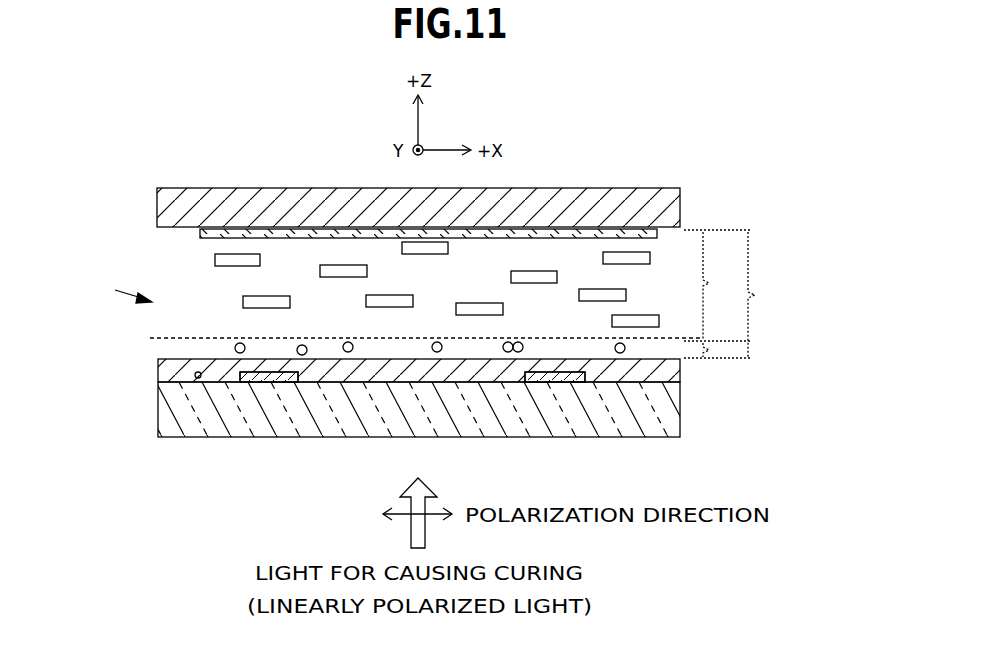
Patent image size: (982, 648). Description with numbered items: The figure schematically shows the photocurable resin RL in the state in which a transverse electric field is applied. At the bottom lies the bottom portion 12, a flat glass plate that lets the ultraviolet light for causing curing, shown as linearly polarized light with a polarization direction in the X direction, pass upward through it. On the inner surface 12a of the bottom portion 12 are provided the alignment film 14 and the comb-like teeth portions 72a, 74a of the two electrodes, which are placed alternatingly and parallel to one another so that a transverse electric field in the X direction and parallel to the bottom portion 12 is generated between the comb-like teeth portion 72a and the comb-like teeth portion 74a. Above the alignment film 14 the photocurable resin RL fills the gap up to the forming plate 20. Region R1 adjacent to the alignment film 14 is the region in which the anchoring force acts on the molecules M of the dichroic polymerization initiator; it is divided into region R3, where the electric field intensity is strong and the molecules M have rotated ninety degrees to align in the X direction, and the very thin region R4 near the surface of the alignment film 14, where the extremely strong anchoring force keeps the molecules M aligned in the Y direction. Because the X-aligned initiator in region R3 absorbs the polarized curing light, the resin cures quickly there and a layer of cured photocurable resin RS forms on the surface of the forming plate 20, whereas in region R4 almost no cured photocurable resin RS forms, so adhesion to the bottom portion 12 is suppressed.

The forming plate 20 is at (682, 205).
The cured photocurable resin RS is at (200, 233).
The photocurable resin RL is at (117, 290).
The molecules of the dichroic polymerization initiator M is at (243, 301).
The alignment film 14 is at (682, 368).
The bottom portion 12 is at (682, 403).
The inner surface 12a is at (198, 378).
The comb-like teeth portion 72a is at (298, 382).
The comb-like teeth portion 74a is at (585, 382).
The region R3 is at (717, 285).
The region R4 is at (717, 350).
The region R1 is at (770, 294).